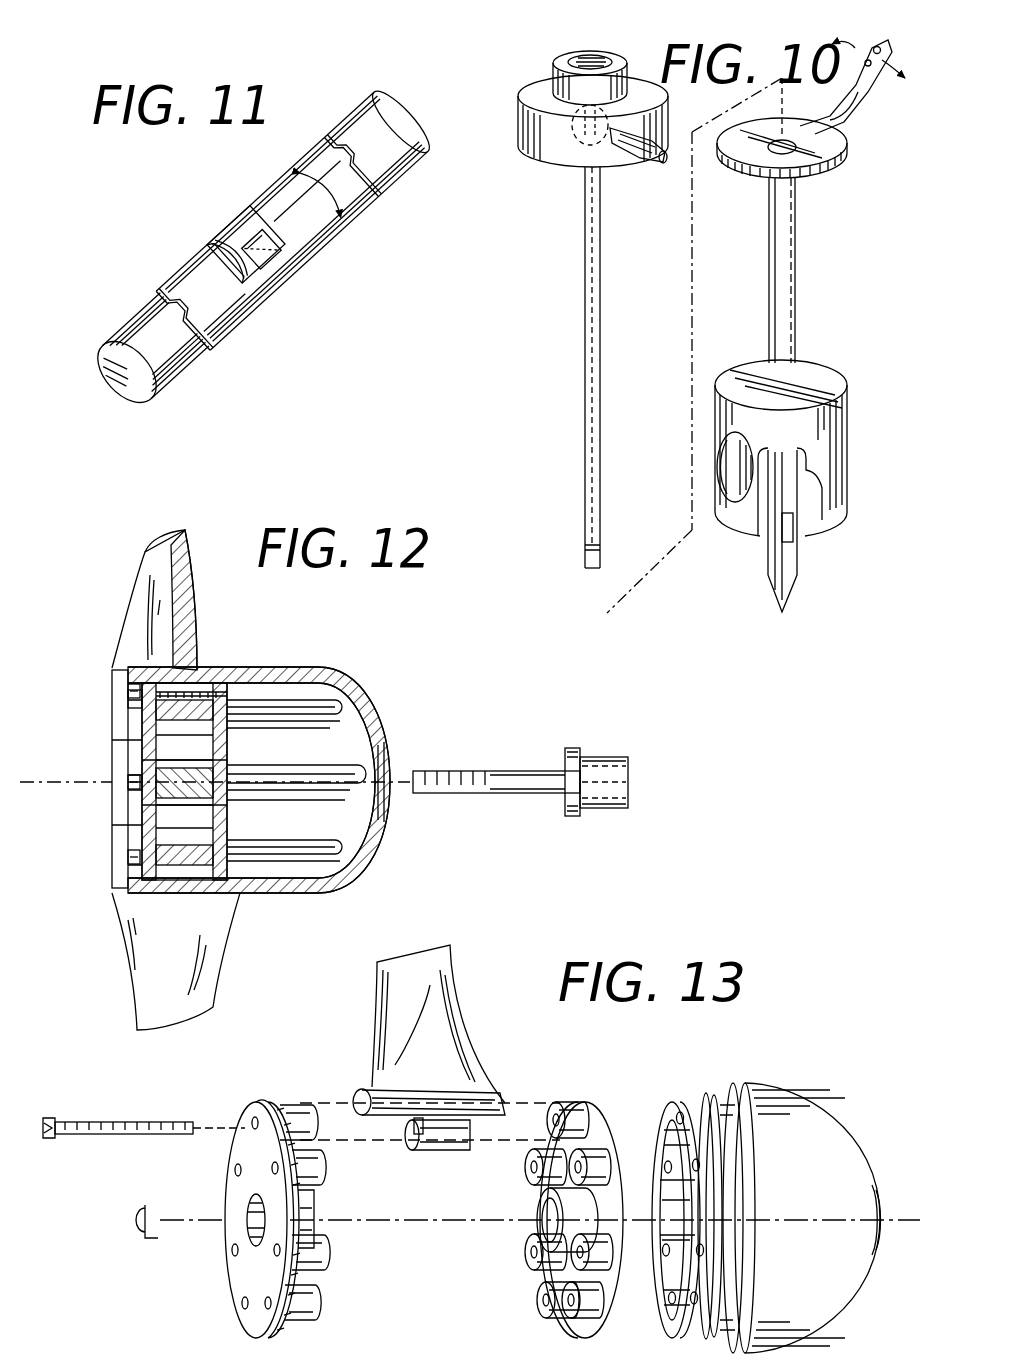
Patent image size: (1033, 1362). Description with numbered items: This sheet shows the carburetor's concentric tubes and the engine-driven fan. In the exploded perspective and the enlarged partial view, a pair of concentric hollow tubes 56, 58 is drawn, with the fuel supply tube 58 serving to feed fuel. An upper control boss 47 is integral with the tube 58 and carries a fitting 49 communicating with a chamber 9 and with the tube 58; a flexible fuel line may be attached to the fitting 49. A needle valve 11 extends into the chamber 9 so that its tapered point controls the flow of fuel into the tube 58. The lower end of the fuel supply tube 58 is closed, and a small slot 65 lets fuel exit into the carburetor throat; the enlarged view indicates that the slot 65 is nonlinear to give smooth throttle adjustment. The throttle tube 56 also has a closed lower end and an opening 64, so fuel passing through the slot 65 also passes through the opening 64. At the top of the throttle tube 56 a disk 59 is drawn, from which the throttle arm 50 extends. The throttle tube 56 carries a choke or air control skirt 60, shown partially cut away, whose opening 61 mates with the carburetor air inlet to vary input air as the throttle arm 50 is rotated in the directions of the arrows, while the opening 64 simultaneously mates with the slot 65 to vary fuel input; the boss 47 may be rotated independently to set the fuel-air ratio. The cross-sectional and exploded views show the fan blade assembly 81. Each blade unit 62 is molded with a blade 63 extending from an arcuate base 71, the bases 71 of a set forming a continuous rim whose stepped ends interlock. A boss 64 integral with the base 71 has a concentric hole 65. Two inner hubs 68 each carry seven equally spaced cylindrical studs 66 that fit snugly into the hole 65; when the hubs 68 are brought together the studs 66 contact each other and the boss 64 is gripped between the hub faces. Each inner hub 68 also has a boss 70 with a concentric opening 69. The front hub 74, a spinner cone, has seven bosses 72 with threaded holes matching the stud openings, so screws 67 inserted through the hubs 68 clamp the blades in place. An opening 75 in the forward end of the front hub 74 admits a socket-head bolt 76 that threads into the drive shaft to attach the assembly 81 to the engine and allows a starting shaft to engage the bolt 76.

In FIG. 10, the chamber 9 is at (575, 145).
In FIG. 10, the needle valve 11 is at (560, 58).
In FIG. 10, the upper control boss 47 is at (657, 95).
In FIG. 10, the fitting 49 is at (655, 160).
In FIG. 10, the throttle arm 50 is at (852, 80).
In FIG. 11, the throttle tube 56 is at (312, 254).
In FIG. 10, the throttle tube 56 is at (795, 316).
In FIG. 11, the fuel supply tube 58 is at (178, 380).
In FIG. 10, the fuel supply tube 58 is at (600, 312).
In FIG. 10, the disk 59 is at (843, 147).
In FIG. 10, the air control skirt 60 is at (848, 460).
In FIG. 10, the opening in skirt 61 is at (712, 470).
In FIG. 12, the opening in skirt 61 is at (114, 817).
In FIG. 12, the blade unit 62 is at (96, 646).
In FIG. 13, the blade unit 62 is at (496, 1040).
In FIG. 12, the blade 63 is at (205, 592).
In FIG. 13, the blade 63 is at (375, 1000).
In FIG. 11, the boss 64 is at (232, 222).
In FIG. 10, the boss 64 is at (795, 532).
In FIG. 12, the boss 64 is at (142, 726).
In FIG. 13, the boss 64 is at (452, 1150).
In FIG. 11, the slot 65 is at (250, 256).
In FIG. 10, the slot 65 is at (600, 540).
In FIG. 12, the slot 65 is at (200, 668).
In FIG. 13, the slot 65 is at (412, 1134).
In FIG. 12, the cylindrical studs 66 is at (235, 682).
In FIG. 13, the cylindrical studs 66 is at (294, 1108).
In FIG. 12, the screws 67 is at (128, 692).
In FIG. 13, the screws 67 is at (135, 1136).
In FIG. 12, the inner hubs 68 is at (112, 838).
In FIG. 13, the inner hubs 68 is at (228, 1175).
In FIG. 12, the opening 69 is at (128, 788).
In FIG. 13, the opening 69 is at (252, 1230).
In FIG. 12, the boss 70 is at (222, 812).
In FIG. 13, the boss 70 is at (314, 1208).
In FIG. 12, the arcuate base 71 is at (216, 682).
In FIG. 13, the arcuate base 71 is at (432, 1095).
In FIG. 12, the bosses 72 is at (305, 715).
In FIG. 13, the bosses 72 is at (676, 1116).
In FIG. 12, the front hub 74 is at (345, 682).
In FIG. 13, the front hub 74 is at (852, 1142).
In FIG. 12, the opening 75 is at (395, 795).
In FIG. 13, the opening 75 is at (878, 1260).
In FIG. 12, the bolt 76 is at (605, 808).
In FIG. 12, the fan blade assembly 81 is at (435, 742).